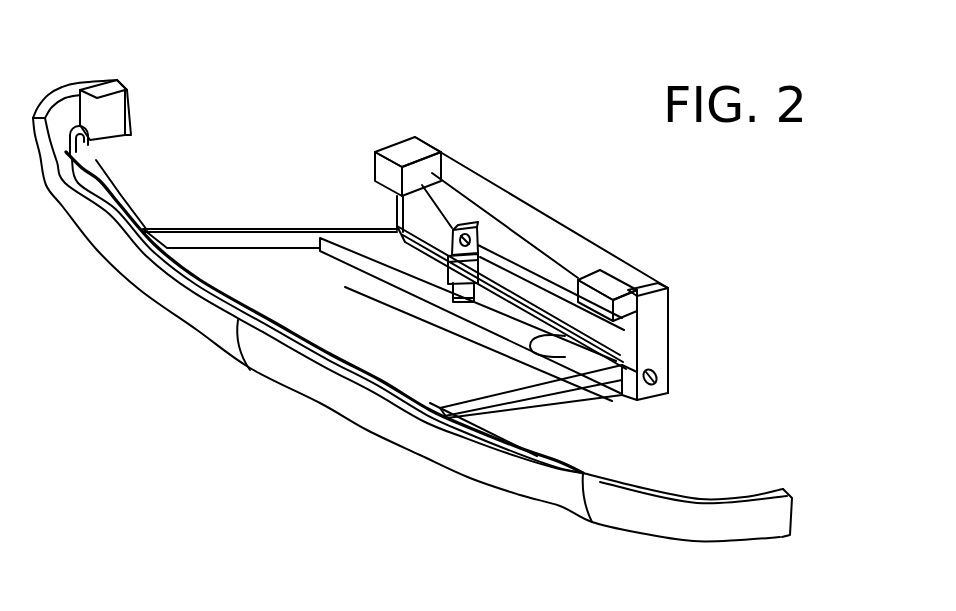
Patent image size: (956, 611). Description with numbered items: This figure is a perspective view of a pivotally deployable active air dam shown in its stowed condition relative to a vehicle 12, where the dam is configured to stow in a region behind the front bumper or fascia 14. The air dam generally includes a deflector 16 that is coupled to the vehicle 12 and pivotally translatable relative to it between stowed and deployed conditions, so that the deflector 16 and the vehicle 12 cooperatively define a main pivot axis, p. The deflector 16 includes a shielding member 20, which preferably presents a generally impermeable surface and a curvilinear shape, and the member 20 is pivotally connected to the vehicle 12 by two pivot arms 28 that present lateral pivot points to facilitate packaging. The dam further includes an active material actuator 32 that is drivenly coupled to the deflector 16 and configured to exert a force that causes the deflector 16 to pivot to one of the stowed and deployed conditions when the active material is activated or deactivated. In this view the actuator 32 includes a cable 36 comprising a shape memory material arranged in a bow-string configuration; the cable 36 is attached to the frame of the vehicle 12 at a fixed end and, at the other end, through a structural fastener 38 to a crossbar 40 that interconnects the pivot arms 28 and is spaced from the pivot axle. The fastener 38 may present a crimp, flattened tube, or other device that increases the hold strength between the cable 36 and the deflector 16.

The vehicle 12 is at (432, 141).
The front bumper or fascia 14 is at (72, 83).
The deflector 16 is at (244, 192).
The shielding member 20 is at (93, 165).
The pivot arms 28 is at (508, 403).
The active material actuator 32 is at (480, 214).
The cable 36 is at (522, 265).
The structural fastener 38 is at (567, 383).
The crossbar 40 is at (407, 292).
The main pivot axis p is at (677, 393).